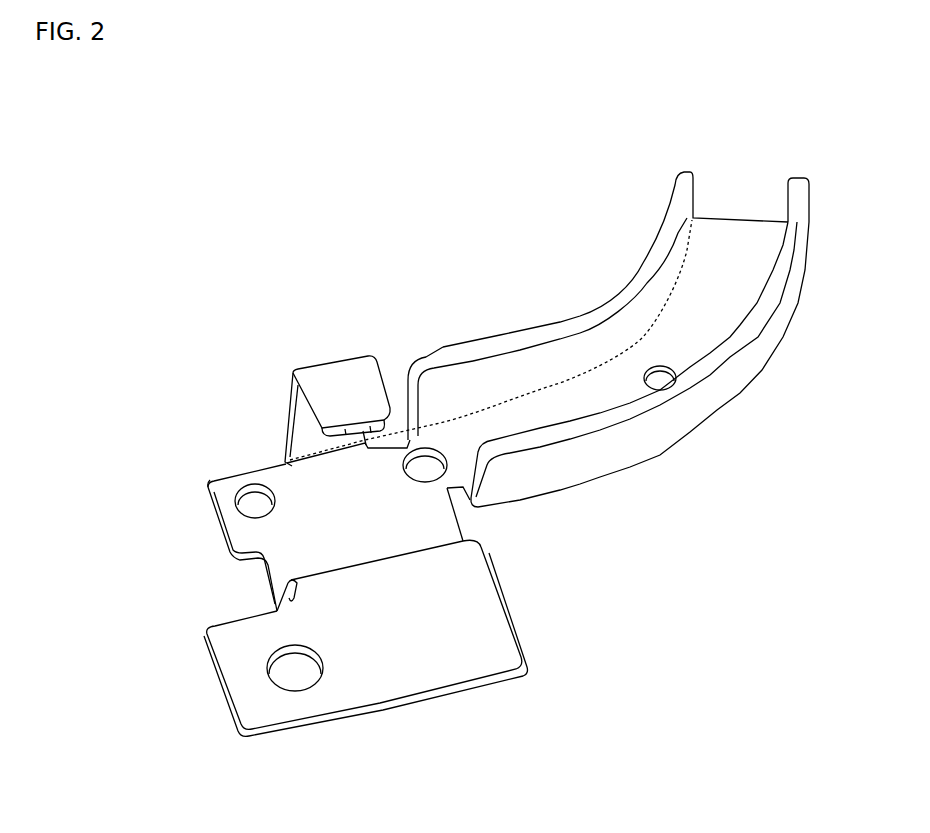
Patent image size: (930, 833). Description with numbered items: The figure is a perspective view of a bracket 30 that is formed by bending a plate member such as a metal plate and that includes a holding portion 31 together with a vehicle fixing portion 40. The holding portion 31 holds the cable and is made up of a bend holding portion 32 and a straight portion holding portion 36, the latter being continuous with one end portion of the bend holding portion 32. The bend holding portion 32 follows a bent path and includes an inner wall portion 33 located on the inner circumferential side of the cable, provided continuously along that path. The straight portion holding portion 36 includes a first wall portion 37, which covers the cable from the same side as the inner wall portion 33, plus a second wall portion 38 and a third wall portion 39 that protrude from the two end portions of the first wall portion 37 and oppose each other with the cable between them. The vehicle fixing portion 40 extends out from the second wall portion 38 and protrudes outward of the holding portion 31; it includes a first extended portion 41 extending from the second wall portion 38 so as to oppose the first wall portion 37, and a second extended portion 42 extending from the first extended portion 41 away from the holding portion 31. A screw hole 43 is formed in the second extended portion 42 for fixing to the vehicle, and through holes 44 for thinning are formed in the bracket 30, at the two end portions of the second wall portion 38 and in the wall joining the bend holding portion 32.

The bracket 30 is at (407, 206).
The holding portion 31 is at (333, 291).
The bend holding portion 32 is at (440, 340).
The inner wall portion 33 is at (558, 333).
The straight portion holding portion 36 is at (345, 345).
The first wall portion 37 is at (290, 402).
The second wall portion 38 is at (281, 473).
The third wall portion 39 is at (320, 383).
The vehicle fixing portion 40 is at (457, 704).
The first extended portion 41 is at (275, 590).
The second extended portion 42 is at (396, 690).
The screw hole 43 is at (298, 691).
The through hole 44 is at (245, 513).